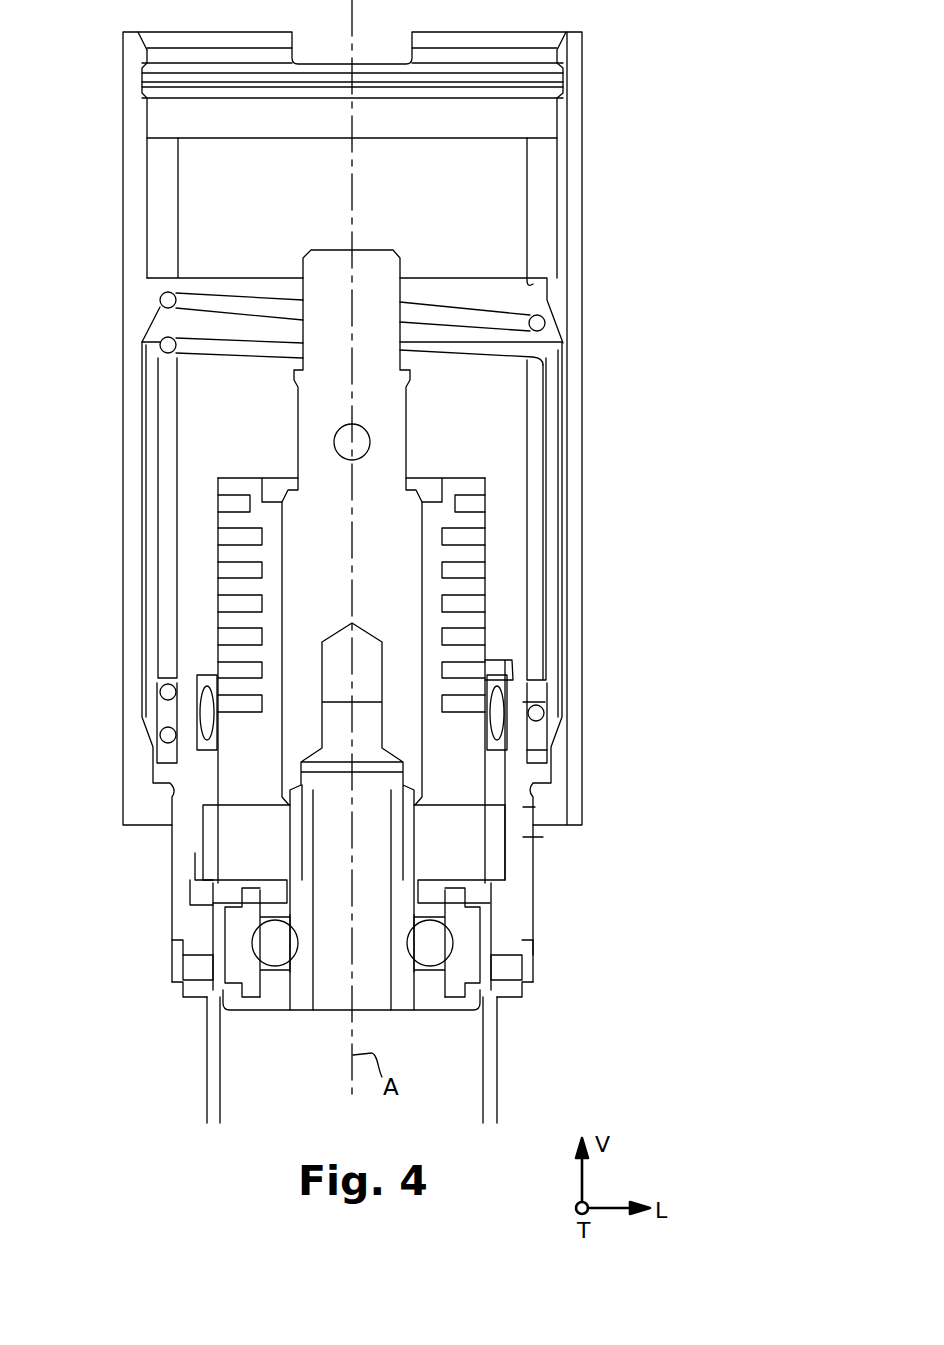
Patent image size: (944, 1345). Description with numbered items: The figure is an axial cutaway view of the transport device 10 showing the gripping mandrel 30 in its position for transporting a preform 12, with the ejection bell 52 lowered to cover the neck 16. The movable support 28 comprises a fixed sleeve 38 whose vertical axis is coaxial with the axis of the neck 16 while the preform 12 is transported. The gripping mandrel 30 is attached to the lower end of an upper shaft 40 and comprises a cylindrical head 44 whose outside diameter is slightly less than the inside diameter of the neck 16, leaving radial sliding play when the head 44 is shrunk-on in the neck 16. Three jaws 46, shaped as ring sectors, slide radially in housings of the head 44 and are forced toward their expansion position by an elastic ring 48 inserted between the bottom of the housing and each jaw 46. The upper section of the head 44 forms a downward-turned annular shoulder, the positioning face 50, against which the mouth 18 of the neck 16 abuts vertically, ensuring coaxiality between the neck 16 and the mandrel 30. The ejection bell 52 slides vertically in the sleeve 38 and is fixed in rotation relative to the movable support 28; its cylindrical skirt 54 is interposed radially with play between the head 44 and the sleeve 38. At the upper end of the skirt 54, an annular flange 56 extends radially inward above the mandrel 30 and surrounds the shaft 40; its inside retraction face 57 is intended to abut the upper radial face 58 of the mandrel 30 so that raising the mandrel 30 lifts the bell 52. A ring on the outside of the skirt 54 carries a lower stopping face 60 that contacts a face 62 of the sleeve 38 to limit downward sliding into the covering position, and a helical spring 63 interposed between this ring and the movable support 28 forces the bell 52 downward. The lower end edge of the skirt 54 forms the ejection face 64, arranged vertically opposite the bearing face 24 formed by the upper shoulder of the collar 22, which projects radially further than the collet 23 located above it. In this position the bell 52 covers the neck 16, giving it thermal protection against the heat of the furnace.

The transport device 10 is at (670, 350).
The preform 12 is at (176, 1076).
The neck 16 is at (518, 925).
The mouth 18 is at (225, 830).
The collar 22 is at (515, 1005).
The collet 23 is at (205, 940).
The bearing face 24 is at (512, 968).
The movable support 28 is at (598, 99).
The gripping mandrel 30 is at (260, 785).
The sleeve 38 is at (570, 160).
The upper shaft 40 is at (390, 592).
The head 44 is at (297, 990).
The jaws 46 is at (240, 935).
The elastic ring 48 is at (276, 988).
The positioning face 50 is at (213, 892).
The ejection bell 52 is at (535, 840).
The skirt 54 is at (535, 800).
The flange 56 is at (207, 667).
The retraction face 57 is at (207, 717).
The upper radial face 58 is at (462, 800).
The stopping face 60 is at (542, 787).
The face 62 is at (547, 758).
The helical spring 63 is at (574, 334).
The ejection face 64 is at (195, 970).